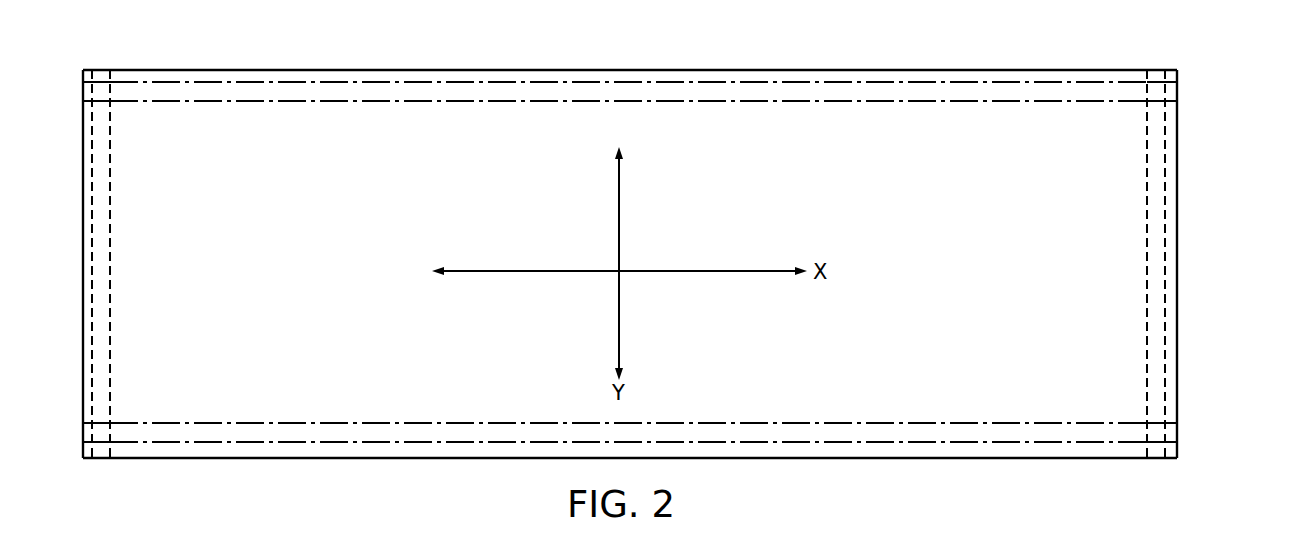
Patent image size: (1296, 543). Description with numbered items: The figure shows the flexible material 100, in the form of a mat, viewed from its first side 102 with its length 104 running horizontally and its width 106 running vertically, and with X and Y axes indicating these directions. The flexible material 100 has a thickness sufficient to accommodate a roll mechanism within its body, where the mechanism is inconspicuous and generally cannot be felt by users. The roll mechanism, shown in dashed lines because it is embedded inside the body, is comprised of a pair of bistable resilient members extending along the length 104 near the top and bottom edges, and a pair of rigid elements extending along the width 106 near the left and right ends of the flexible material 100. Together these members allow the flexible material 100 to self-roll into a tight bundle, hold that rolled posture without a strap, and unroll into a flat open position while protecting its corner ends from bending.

The flexible material 100 is at (1088, 33).
The first side 102 is at (378, 178).
The length 104 is at (145, 70).
The width 106 is at (1168, 292).